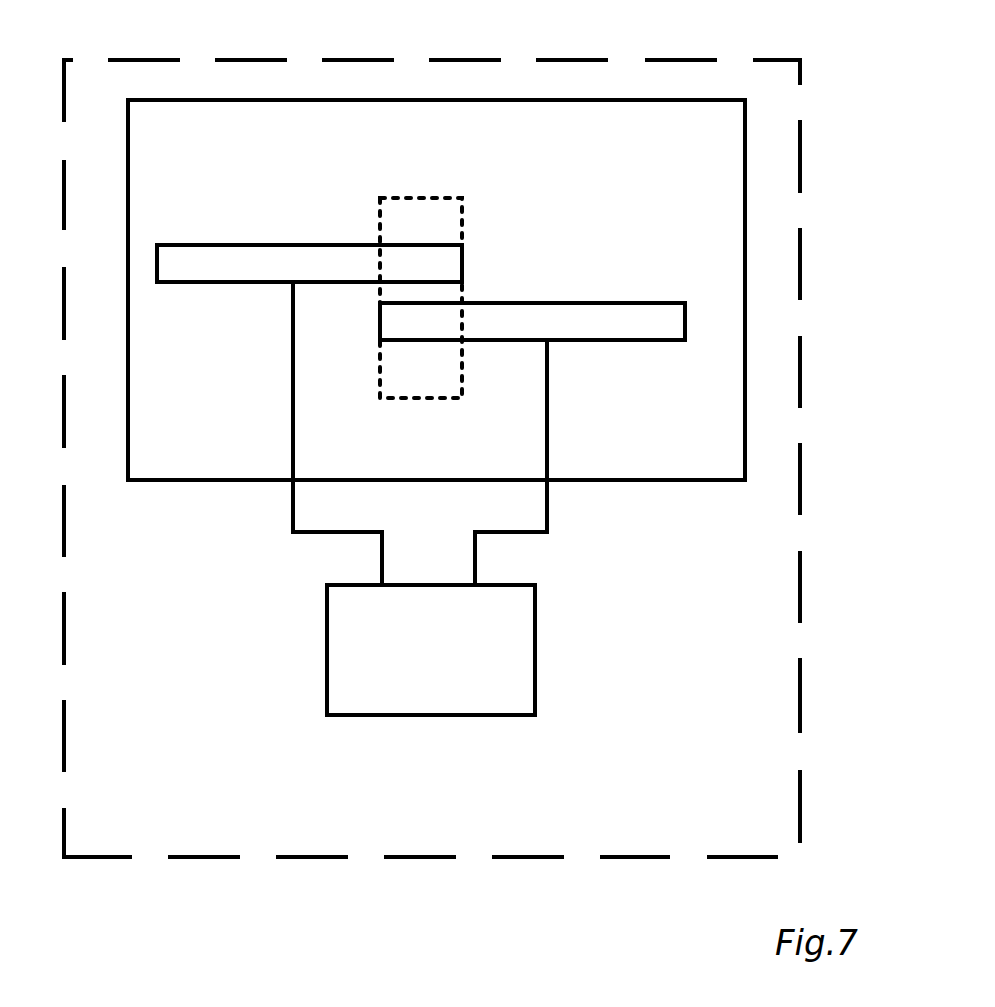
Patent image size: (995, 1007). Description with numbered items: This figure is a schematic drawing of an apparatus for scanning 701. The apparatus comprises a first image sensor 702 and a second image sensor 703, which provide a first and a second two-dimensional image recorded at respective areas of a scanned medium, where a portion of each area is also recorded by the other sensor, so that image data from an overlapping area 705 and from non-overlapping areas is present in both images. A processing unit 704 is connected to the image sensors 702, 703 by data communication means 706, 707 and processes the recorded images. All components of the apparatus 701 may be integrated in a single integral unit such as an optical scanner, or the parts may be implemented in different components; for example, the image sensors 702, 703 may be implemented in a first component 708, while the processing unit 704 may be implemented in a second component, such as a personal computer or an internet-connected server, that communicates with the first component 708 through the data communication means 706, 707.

The apparatus for scanning 701 is at (712, 59).
The first image sensor 702 is at (240, 243).
The second image sensor 703 is at (638, 303).
The processing unit 704 is at (427, 715).
The overlapping area 705 is at (417, 197).
The data communication means 706 is at (295, 448).
The data communication means 707 is at (548, 457).
The first component 708 is at (228, 483).